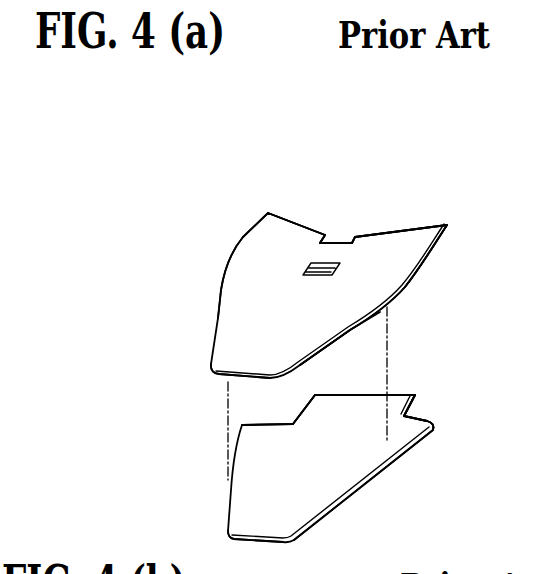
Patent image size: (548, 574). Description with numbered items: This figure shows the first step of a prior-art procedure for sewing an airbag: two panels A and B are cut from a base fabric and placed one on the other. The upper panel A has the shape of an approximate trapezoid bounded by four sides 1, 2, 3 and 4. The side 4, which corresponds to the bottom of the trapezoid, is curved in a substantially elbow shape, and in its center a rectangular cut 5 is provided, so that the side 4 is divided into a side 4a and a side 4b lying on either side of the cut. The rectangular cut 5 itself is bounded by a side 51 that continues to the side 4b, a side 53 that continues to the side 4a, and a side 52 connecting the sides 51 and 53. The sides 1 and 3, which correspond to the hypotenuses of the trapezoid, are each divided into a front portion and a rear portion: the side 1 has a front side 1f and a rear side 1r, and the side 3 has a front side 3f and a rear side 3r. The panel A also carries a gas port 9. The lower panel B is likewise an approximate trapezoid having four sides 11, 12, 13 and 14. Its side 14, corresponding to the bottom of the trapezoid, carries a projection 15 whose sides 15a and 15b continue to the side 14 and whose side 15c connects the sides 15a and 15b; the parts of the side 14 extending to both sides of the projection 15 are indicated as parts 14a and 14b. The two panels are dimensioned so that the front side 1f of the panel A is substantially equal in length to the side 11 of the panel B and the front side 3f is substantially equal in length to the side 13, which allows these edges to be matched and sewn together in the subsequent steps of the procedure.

The side 1 is at (213, 350).
The front side 1f is at (223, 282).
The rear side 1r is at (242, 239).
The side 2 is at (250, 380).
The side 3 is at (404, 289).
The rear side 3r is at (440, 236).
The front side 3f is at (347, 331).
The side 4 is at (427, 213).
The side 4a is at (300, 232).
The side 4b is at (388, 236).
The rectangular cut 5 is at (340, 242).
The side 51 is at (352, 243).
The side 52 is at (346, 244).
The side 53 is at (320, 238).
The gas port 9 is at (314, 276).
The panel A is at (232, 318).
The side 11 is at (228, 452).
The side 12 is at (252, 545).
The side 13 is at (368, 483).
The side 14 is at (406, 375).
The part of side 14a is at (283, 421).
The part of side 14b is at (434, 424).
The projection 15 is at (416, 395).
The side 15a is at (303, 402).
The side 15b is at (412, 401).
The side 15c is at (368, 395).
The panel B is at (244, 502).